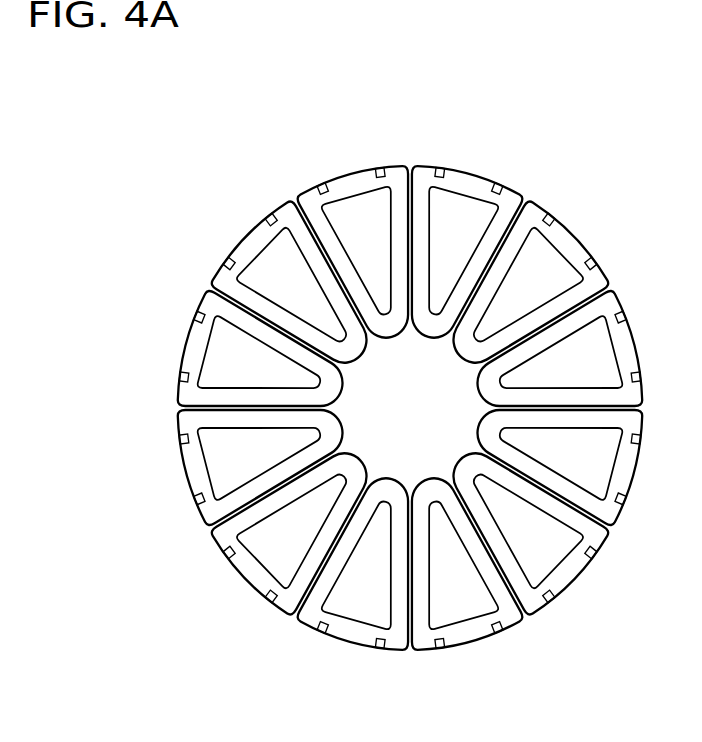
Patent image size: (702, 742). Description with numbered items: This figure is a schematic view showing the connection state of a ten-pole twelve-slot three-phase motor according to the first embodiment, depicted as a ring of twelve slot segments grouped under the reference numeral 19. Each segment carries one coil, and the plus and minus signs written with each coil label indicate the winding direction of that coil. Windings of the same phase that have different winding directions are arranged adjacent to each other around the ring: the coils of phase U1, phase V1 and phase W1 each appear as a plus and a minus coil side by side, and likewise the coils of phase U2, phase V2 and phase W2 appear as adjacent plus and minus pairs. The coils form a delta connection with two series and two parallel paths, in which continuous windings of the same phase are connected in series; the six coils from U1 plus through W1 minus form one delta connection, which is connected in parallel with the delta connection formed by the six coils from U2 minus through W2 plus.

The stator core with twelve segmented teeth 19 is at (190, 172).
The U-phase coil U1 is at (493, 537).
The V-phase coil V1 is at (557, 408).
The W-phase coil W1 is at (493, 278).
The U-phase coil U2 is at (326, 278).
The V-phase coil V2 is at (264, 408).
The W-phase coil W2 is at (326, 537).